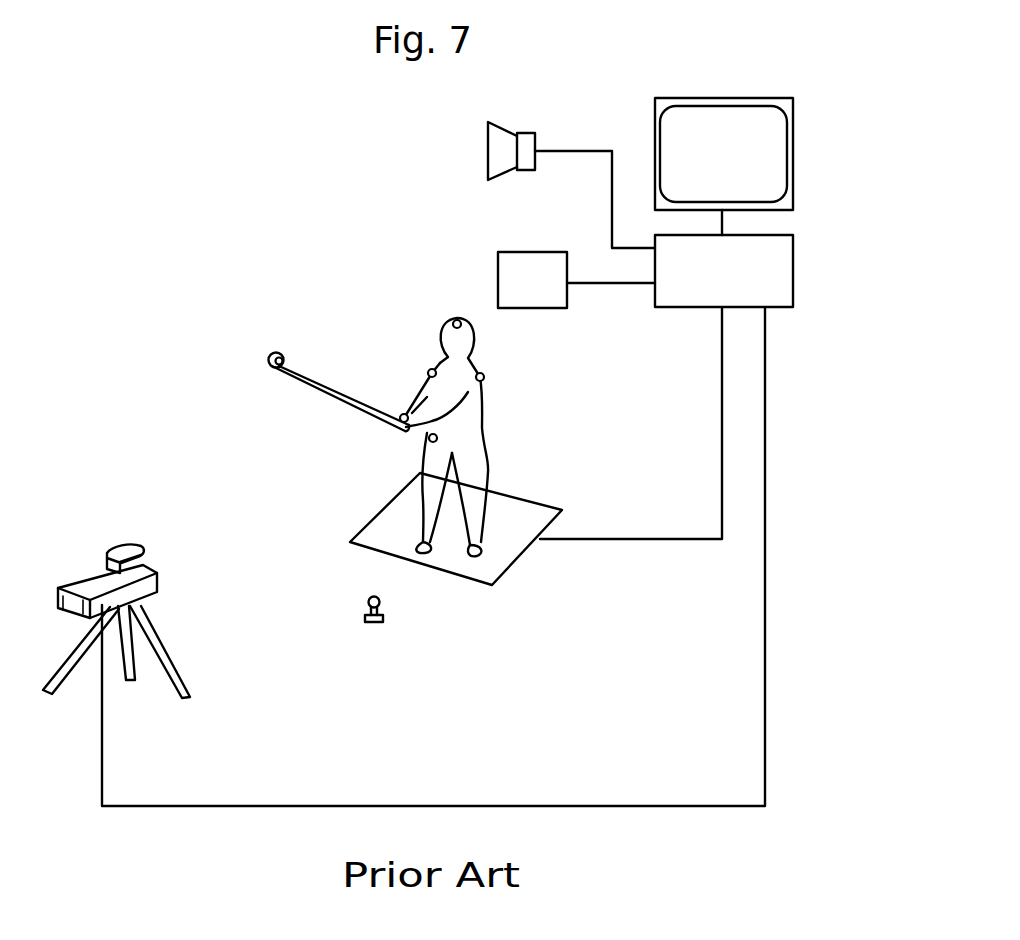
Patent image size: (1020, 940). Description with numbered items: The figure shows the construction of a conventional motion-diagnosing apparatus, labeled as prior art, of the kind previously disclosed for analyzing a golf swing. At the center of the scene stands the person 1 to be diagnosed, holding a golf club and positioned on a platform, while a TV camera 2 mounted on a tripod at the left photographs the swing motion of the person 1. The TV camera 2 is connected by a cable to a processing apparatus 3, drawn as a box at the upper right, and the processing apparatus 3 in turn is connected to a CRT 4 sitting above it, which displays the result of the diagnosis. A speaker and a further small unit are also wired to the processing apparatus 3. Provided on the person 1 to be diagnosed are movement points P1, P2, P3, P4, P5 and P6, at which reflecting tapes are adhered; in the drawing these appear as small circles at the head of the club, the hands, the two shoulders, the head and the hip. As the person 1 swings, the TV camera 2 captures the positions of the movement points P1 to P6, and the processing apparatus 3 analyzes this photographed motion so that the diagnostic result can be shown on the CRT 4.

The person to be diagnosed 1 is at (487, 465).
The TV camera 2 is at (157, 580).
The processing apparatus 3 is at (793, 272).
The CRT 4 is at (793, 142).
The movement point P1 is at (280, 339).
The movement point P2 is at (389, 399).
The movement point P3 is at (496, 378).
The movement point P4 is at (417, 360).
The movement point P5 is at (457, 307).
The movement point P6 is at (417, 450).